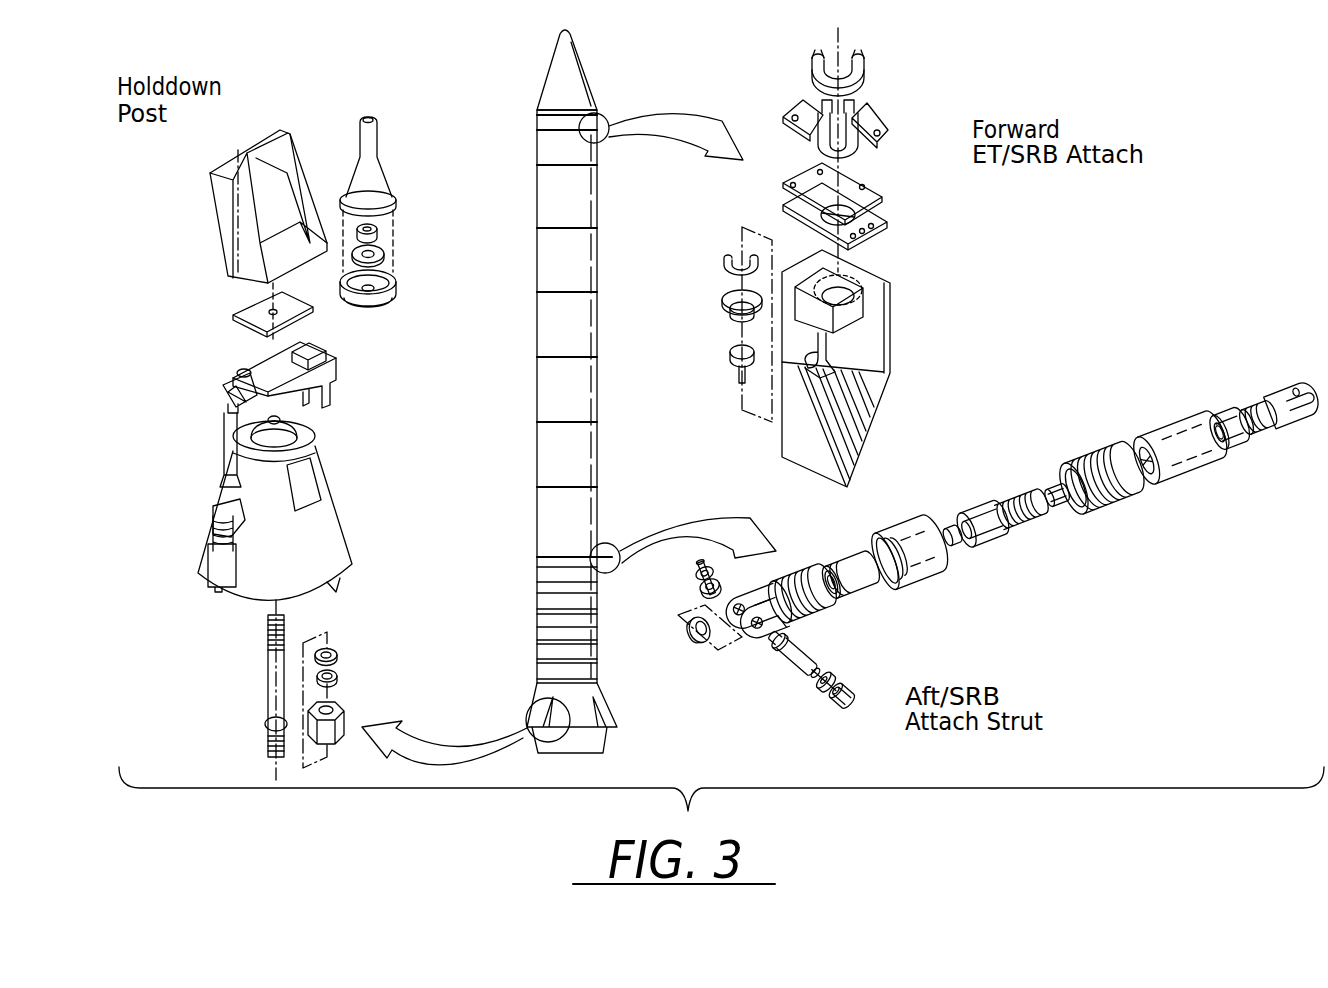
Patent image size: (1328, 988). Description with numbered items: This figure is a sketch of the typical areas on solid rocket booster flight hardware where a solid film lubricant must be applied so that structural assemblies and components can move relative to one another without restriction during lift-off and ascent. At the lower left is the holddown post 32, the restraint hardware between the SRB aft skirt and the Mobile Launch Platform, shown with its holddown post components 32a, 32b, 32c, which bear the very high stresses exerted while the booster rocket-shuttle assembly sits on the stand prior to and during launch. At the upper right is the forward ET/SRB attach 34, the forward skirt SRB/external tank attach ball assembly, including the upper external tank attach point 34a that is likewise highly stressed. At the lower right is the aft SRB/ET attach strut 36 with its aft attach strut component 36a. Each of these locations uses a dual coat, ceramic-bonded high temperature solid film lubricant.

The holddown post 32 is at (307, 173).
The holddown post component 32a is at (390, 255).
The holddown post component 32b is at (338, 367).
The holddown post component 32c is at (340, 655).
The forward ET/SRB attach 34 is at (890, 228).
The upper external tank attach point 34a is at (868, 112).
The aft SRB/ET attach strut 36 is at (847, 603).
The aft attach strut component 36a is at (700, 645).